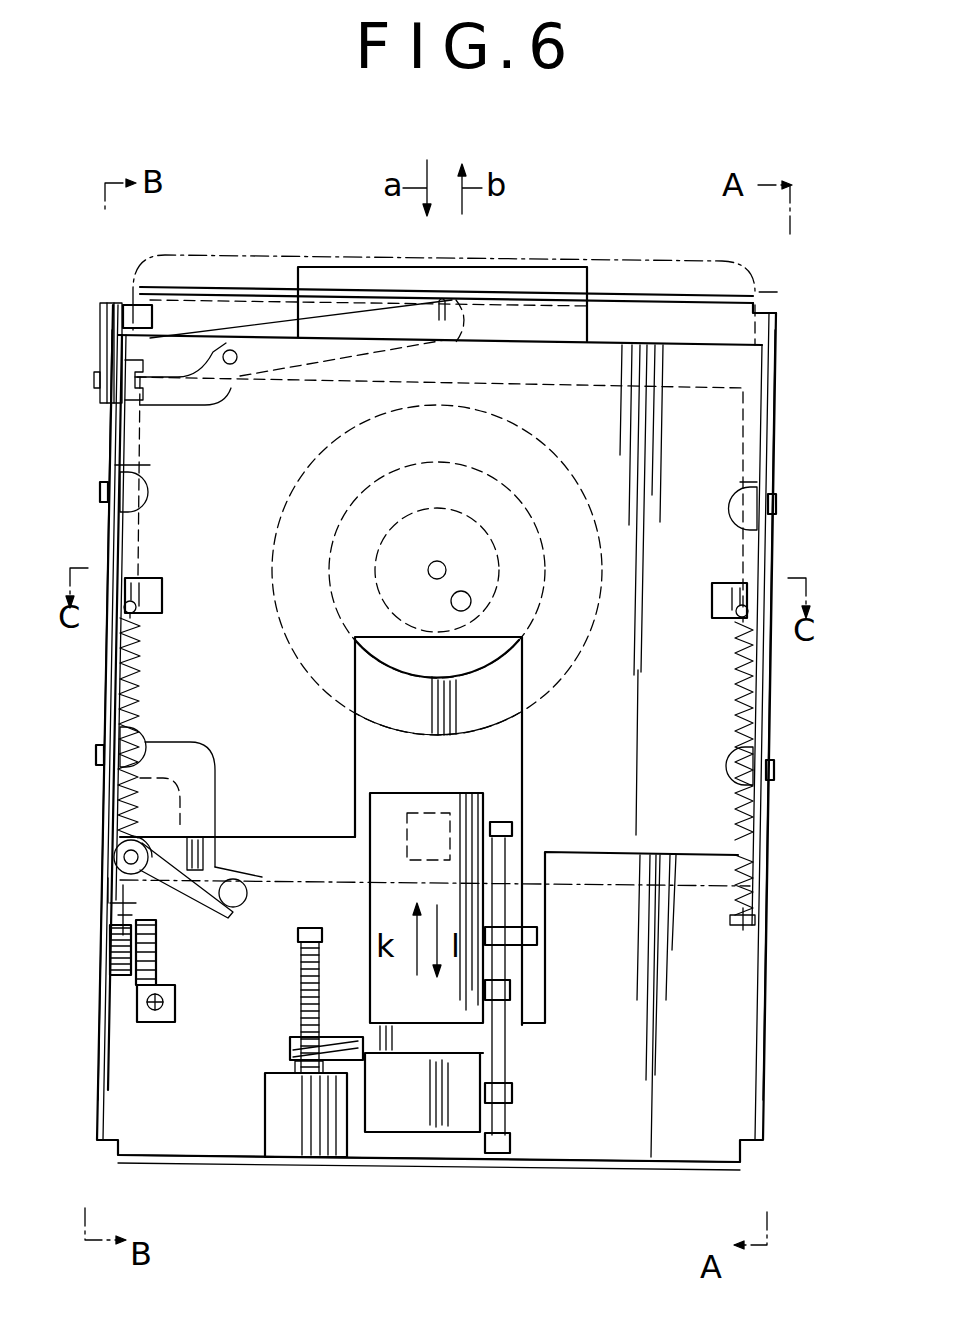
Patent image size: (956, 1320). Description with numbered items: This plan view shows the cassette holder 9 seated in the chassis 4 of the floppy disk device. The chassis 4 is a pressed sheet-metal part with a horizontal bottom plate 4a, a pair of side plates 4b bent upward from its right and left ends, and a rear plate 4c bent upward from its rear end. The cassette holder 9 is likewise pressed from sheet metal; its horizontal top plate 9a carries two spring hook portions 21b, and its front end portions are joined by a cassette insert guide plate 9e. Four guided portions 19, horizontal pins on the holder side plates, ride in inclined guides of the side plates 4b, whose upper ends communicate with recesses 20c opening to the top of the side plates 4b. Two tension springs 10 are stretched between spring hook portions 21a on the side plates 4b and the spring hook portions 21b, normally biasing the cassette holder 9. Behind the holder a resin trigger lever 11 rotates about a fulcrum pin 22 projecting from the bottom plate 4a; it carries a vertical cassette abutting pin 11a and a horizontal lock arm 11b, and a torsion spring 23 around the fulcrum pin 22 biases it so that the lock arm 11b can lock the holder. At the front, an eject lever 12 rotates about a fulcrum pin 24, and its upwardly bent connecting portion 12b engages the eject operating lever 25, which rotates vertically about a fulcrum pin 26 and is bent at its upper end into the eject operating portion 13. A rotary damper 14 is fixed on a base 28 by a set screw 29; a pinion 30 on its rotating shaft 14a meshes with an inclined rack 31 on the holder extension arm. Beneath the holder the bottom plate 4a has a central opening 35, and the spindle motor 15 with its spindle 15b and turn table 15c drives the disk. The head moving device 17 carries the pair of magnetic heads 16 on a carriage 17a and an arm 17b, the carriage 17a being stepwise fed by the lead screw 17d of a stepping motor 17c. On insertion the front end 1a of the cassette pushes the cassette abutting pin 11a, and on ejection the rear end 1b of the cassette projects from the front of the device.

The chassis 4 is at (615, 1178).
The bottom plate 4a is at (541, 1130).
The side plates 4b is at (761, 1125).
The rear plate 4c is at (360, 1165).
The rear end of cassette 1b is at (613, 262).
The front end of cassette 1a is at (632, 883).
The cassette holder 9 is at (705, 414).
The top plate 9a is at (730, 432).
The cassette insert guide plate 9e is at (531, 312).
The tension springs 10 is at (735, 670).
The trigger lever 11 is at (200, 858).
The cassette abutting pin 11a is at (248, 896).
The lock arm 11b is at (200, 780).
The eject lever 12 is at (362, 332).
The connecting portion 12b is at (144, 398).
The eject operating portion 13 is at (145, 304).
The damper 14 is at (158, 974).
The rotating shaft 14a is at (157, 950).
The spindle motor 15 is at (406, 662).
The spindle 15b is at (446, 564).
The turn table 15c is at (486, 600).
The magnetic heads 16 is at (430, 812).
The head moving device 17 is at (512, 1066).
The carriage 17a is at (432, 1132).
The arm 17b is at (480, 962).
The stepping motor 17c is at (286, 1140).
The lead screw 17d is at (300, 1000).
The guided portions 19 is at (774, 770).
The recess 20c is at (734, 746).
The spring hook portions 21a is at (736, 924).
The spring hook portions 21b is at (727, 606).
The fulcrum pin 22 is at (115, 852).
The torsion spring 23 is at (140, 875).
The fulcrum pin 24 is at (224, 351).
The eject operating lever 25 is at (100, 352).
The fulcrum pin 26 is at (96, 380).
The base 28 is at (172, 1010).
The set screw 29 is at (150, 1023).
The pinion 30 is at (110, 966).
The inclined rack 31 is at (115, 898).
The central opening 35 is at (473, 720).